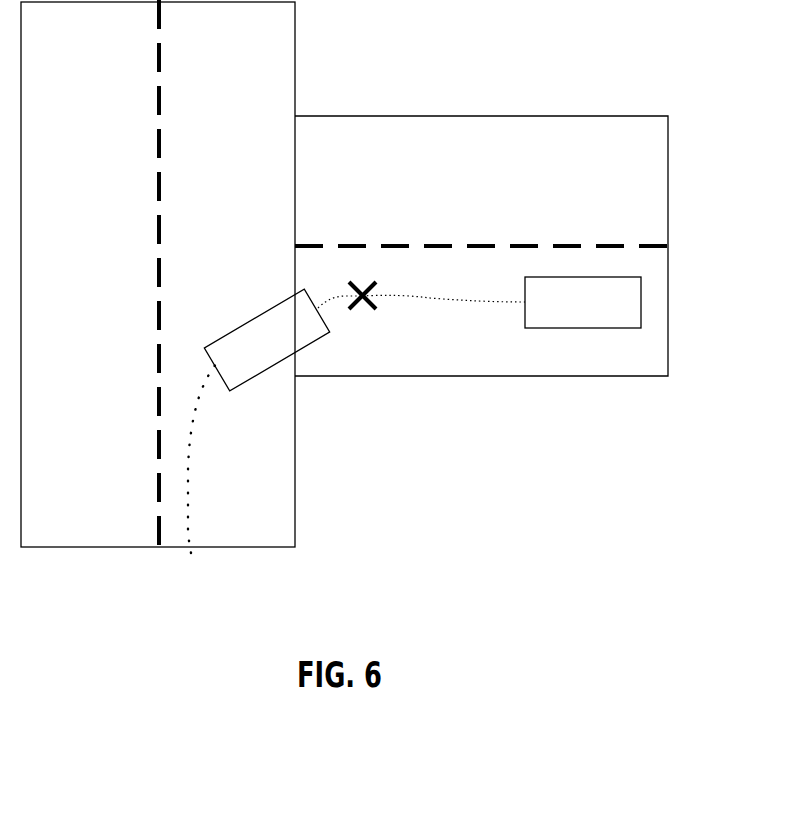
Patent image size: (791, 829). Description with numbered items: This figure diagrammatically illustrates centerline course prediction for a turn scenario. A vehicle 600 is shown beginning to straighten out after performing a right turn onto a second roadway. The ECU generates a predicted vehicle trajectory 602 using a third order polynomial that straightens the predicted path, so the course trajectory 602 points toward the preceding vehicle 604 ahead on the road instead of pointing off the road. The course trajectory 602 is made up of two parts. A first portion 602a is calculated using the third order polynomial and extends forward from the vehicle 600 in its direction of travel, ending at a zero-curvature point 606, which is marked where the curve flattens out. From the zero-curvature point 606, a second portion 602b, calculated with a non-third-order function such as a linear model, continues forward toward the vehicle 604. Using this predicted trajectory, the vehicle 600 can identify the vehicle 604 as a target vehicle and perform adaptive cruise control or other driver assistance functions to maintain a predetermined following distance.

The vehicle 600 is at (245, 327).
The predicted vehicle trajectory 602 is at (415, 330).
The first portion 602a is at (322, 289).
The second portion 602b is at (467, 292).
The vehicle 604 is at (642, 303).
The zero-curvature point 606 is at (362, 284).